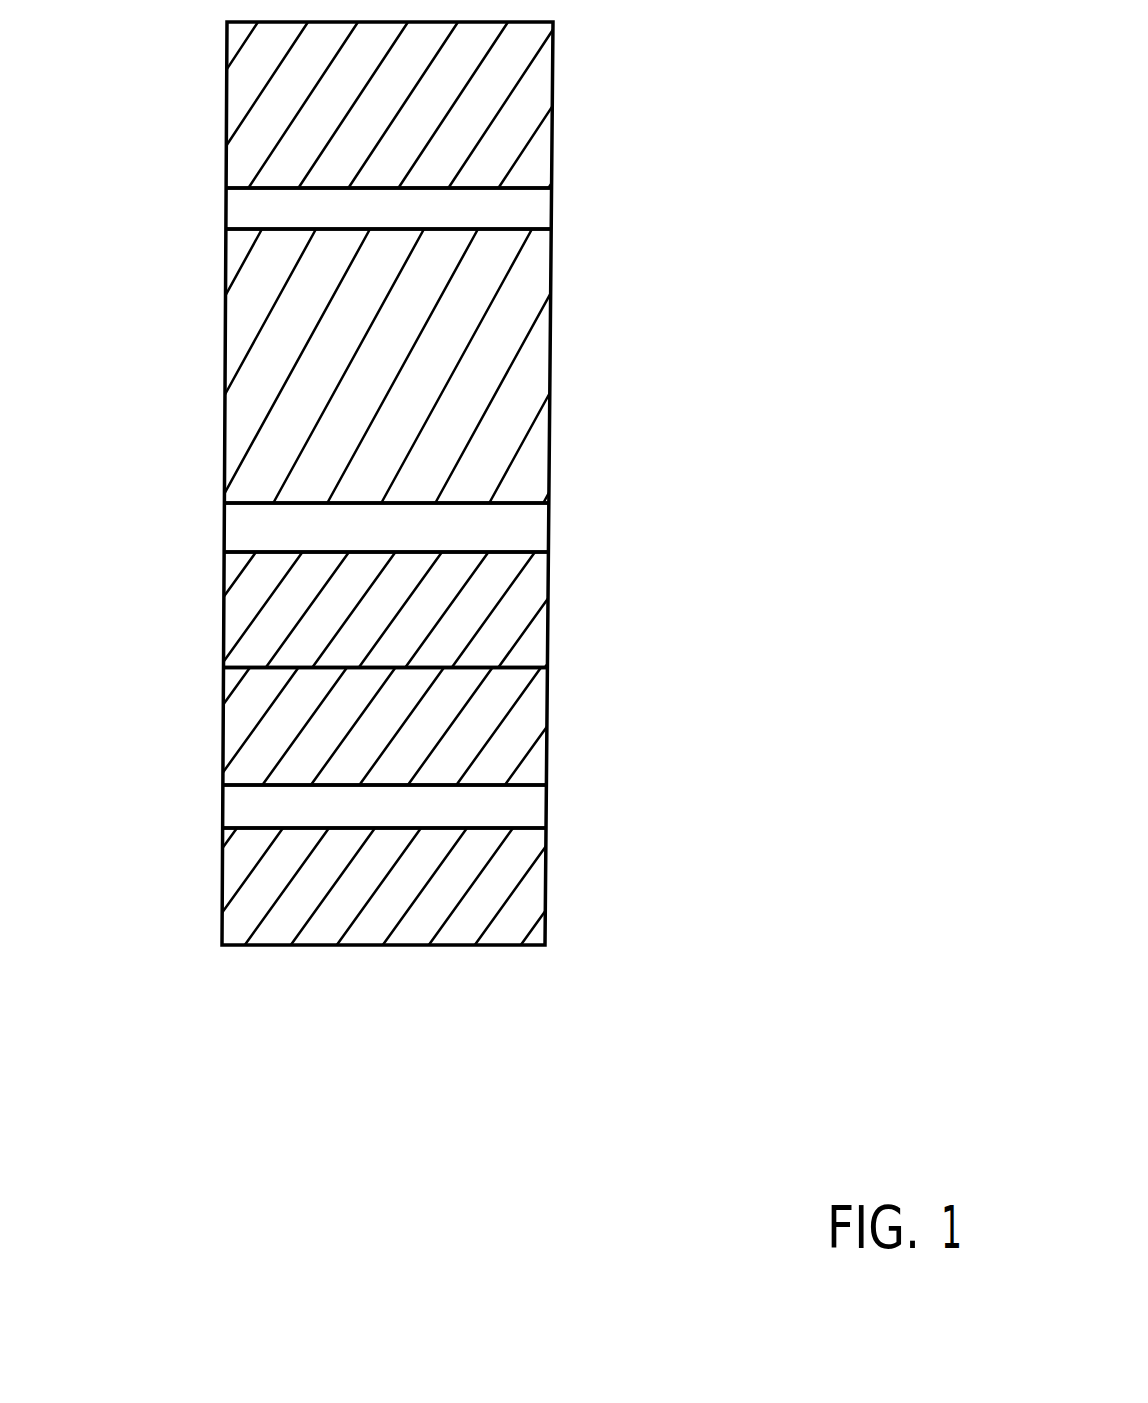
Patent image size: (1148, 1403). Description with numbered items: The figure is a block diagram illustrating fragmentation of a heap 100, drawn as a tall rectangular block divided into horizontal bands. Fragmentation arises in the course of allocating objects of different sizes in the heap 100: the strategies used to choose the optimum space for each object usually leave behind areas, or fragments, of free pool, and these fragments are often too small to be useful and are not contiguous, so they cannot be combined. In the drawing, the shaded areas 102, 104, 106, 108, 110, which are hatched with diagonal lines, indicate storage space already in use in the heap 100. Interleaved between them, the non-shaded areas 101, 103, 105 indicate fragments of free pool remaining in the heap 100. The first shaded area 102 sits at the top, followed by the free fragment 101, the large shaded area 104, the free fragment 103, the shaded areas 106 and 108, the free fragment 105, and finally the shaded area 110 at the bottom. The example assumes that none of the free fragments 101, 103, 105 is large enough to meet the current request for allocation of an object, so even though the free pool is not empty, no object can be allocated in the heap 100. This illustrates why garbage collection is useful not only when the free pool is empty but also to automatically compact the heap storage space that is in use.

The heap 100 is at (404, 946).
The non-shaded area 101 is at (225, 213).
The shaded area 102 is at (553, 63).
The non-shaded area 103 is at (223, 533).
The shaded area 104 is at (551, 345).
The non-shaded area 105 is at (220, 805).
The shaded area 106 is at (548, 625).
The shaded area 108 is at (547, 728).
The shaded area 110 is at (546, 885).